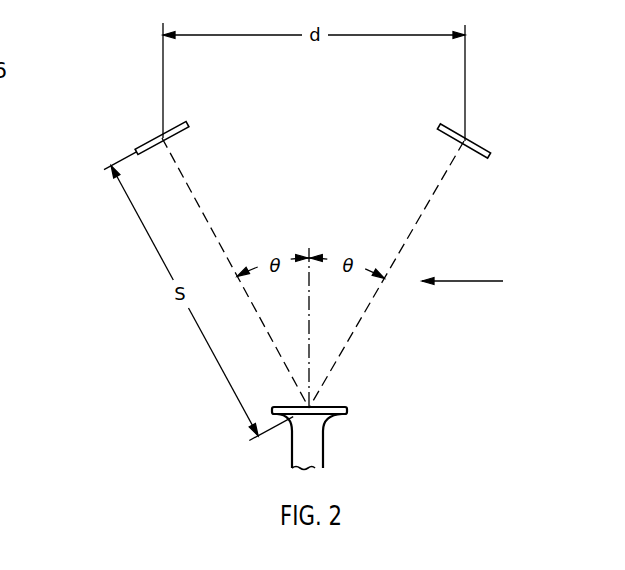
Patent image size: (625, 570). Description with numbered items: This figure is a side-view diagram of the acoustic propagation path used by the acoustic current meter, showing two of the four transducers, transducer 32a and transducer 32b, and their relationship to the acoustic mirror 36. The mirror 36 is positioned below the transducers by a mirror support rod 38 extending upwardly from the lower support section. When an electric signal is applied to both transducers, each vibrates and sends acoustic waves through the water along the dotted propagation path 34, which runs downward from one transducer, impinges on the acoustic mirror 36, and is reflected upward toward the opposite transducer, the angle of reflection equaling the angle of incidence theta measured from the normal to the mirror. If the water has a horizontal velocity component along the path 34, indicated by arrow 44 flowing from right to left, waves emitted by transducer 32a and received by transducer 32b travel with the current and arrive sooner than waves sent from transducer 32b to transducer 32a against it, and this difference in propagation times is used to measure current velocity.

The transducer 32a is at (481, 148).
The transducer 32b is at (142, 146).
The propagation path 34 is at (194, 197).
The acoustic mirror 36 is at (330, 407).
The mirror support rod 38 is at (323, 452).
The arrow 44 is at (462, 281).